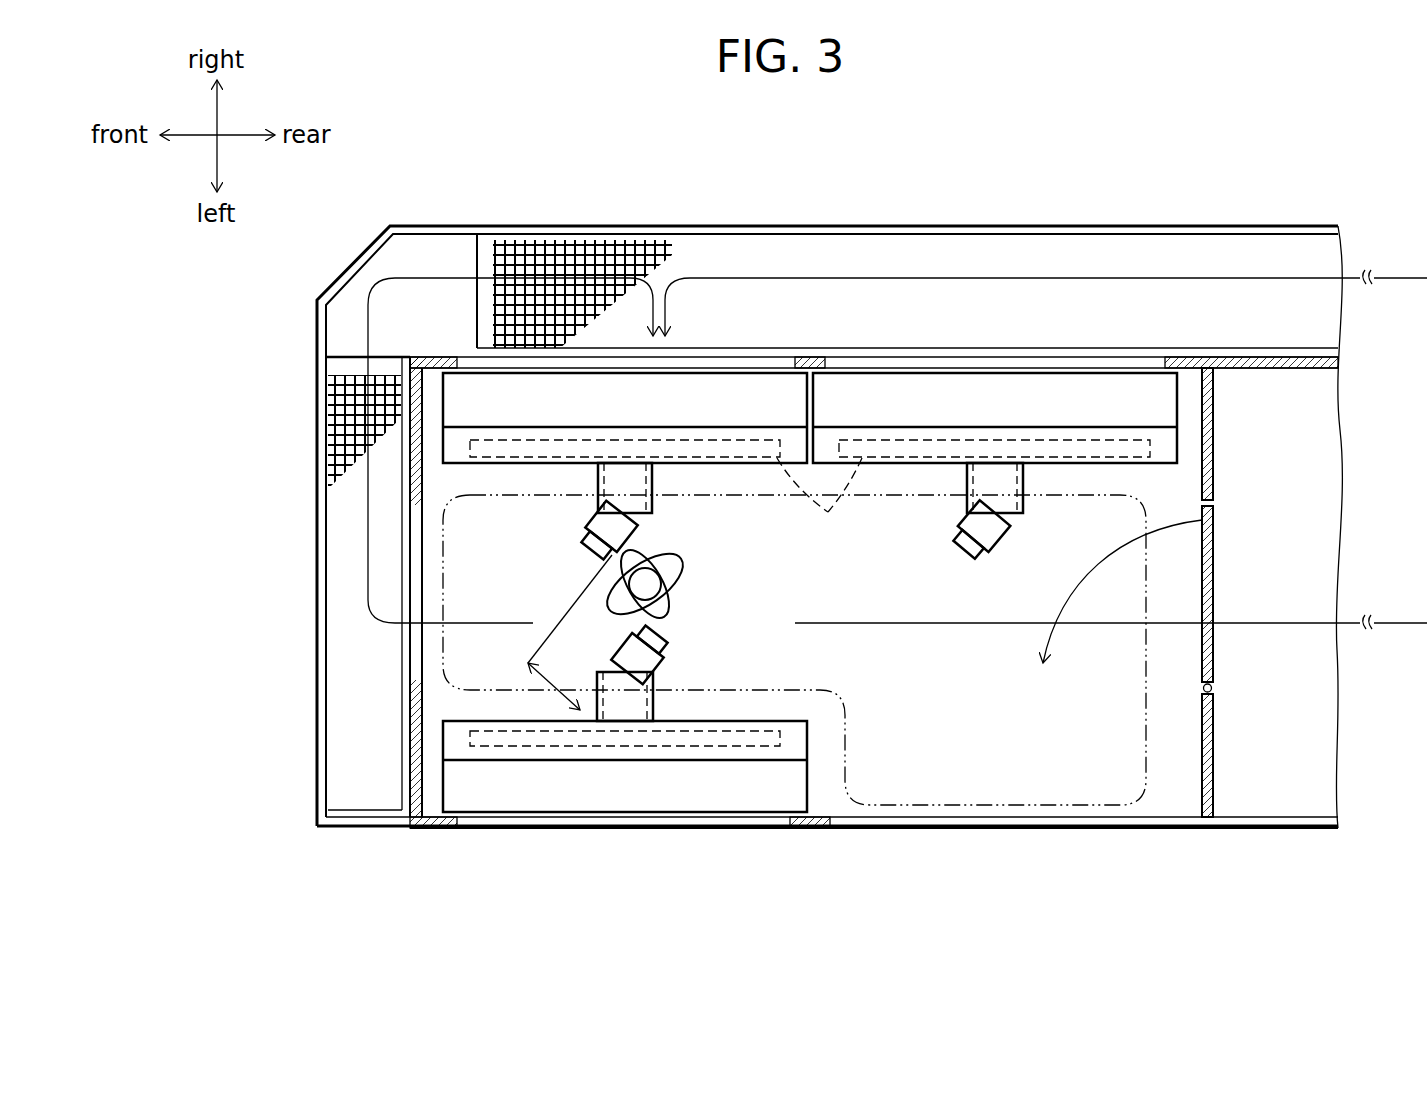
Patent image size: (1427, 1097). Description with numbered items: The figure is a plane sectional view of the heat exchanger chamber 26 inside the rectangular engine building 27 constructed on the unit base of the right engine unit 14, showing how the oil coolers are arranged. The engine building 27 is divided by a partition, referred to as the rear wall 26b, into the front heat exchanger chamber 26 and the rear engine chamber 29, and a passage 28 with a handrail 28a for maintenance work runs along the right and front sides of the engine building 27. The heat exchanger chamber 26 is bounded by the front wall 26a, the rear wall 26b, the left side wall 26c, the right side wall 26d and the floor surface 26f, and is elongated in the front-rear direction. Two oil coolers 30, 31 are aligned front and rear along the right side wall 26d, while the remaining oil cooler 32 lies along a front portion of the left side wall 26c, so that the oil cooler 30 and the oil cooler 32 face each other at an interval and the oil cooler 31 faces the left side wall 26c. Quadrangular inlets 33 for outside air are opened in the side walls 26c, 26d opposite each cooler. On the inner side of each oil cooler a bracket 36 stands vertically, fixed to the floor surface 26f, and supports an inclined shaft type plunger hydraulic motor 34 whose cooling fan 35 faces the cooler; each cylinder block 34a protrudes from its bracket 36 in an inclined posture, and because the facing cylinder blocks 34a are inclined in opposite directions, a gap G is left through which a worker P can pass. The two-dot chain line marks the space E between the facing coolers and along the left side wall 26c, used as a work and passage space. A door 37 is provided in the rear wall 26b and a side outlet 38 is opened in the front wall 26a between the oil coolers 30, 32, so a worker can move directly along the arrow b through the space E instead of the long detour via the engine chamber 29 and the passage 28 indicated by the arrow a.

The right engine unit 14 is at (316, 590).
The heat exchanger chamber 26 is at (1186, 391).
The front wall 26a is at (410, 737).
The rear wall 26b is at (1215, 748).
The left side wall 26c is at (908, 829).
The right side wall 26d is at (812, 360).
The floor surface 26f is at (1175, 703).
The engine building 27 is at (1178, 166).
The passage 28 is at (793, 268).
The handrail 28a is at (891, 233).
The engine chamber 29 is at (1240, 394).
The oil cooler 30 is at (688, 385).
The oil cooler 31 is at (1010, 385).
The oil cooler 32 is at (657, 797).
The inlet 33 is at (787, 358).
The inclined shaft type plunger hydraulic motor 34 is at (642, 525).
The cylinder block 34a is at (598, 528).
The cooling fan 35 is at (828, 512).
The bracket 36 is at (660, 487).
The door 37 is at (1215, 606).
The side outlet 38 is at (415, 668).
The arrow a is at (1392, 278).
The arrow b is at (445, 277).
The space E is at (1140, 829).
The gap G is at (548, 686).
The worker P is at (662, 594).